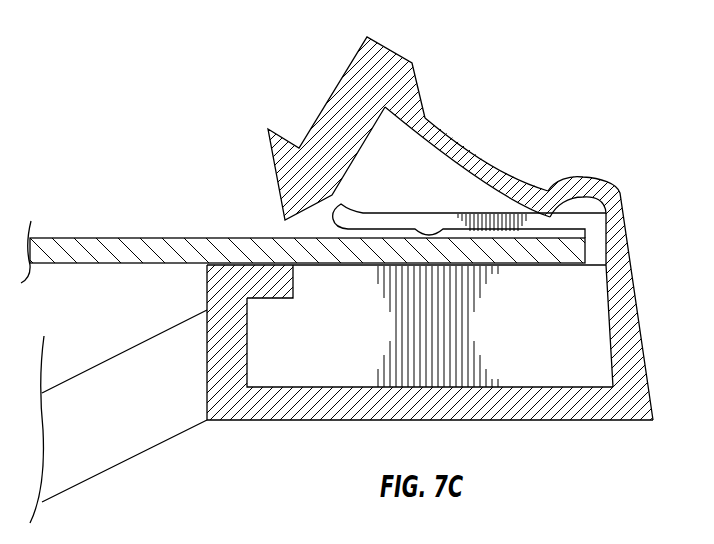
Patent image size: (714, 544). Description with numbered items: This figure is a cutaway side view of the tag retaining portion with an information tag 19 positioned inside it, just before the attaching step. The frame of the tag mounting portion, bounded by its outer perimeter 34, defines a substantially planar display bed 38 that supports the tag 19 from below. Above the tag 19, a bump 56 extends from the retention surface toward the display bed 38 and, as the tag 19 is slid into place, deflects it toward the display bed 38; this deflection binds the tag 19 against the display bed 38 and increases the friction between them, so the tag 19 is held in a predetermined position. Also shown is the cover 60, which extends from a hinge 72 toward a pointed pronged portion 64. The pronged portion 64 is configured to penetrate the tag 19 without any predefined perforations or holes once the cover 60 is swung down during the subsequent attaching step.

The information tag 19 is at (122, 238).
The outer perimeter 34 is at (262, 300).
The display bed 38 is at (246, 265).
The bump 56 is at (438, 230).
The cover 60 is at (484, 132).
The pronged portion 64 is at (338, 93).
The hinge 72 is at (604, 181).